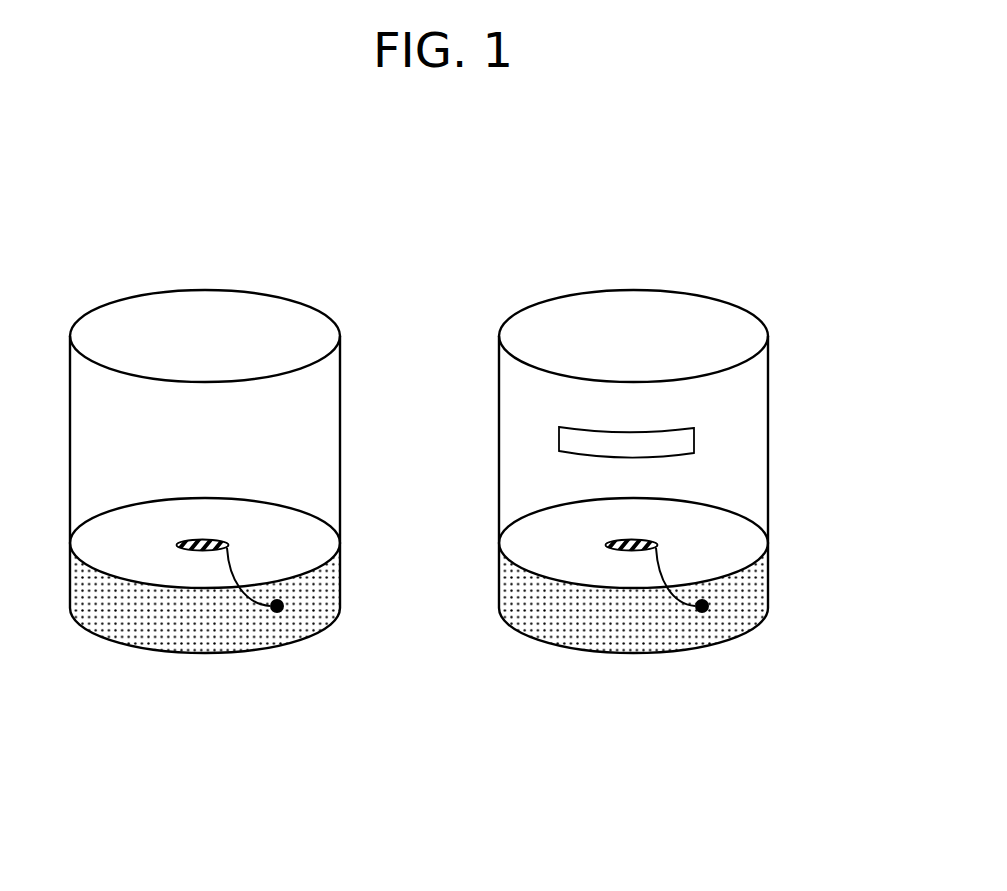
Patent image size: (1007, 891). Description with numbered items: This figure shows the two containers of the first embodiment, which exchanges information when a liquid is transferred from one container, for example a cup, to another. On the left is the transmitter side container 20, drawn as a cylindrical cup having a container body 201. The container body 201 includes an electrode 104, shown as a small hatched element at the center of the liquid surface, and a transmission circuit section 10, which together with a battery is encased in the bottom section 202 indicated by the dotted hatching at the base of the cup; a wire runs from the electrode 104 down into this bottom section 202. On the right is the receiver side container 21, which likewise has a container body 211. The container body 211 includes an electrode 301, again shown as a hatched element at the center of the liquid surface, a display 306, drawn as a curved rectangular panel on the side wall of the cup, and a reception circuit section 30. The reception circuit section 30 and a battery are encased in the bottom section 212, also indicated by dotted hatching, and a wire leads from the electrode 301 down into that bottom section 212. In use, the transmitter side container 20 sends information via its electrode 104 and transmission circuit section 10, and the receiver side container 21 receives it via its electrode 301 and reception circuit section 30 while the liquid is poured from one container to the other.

The transmission circuit section 10 is at (135, 650).
The transmitter side container 20 is at (310, 270).
The container body 201 is at (340, 392).
The bottom section 202 is at (308, 598).
The electrode 104 is at (213, 541).
The reception circuit section 30 is at (568, 650).
The receiver side container 21 is at (739, 270).
The container body 211 is at (768, 392).
The bottom section 212 is at (732, 598).
The electrode 301 is at (642, 541).
The display 306 is at (694, 437).